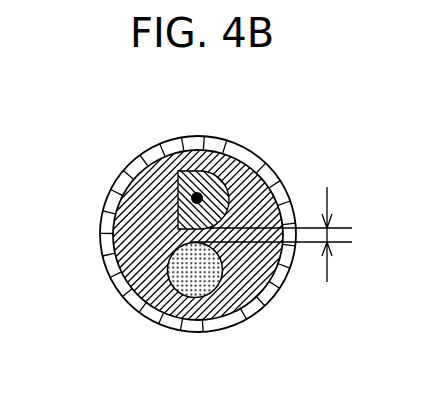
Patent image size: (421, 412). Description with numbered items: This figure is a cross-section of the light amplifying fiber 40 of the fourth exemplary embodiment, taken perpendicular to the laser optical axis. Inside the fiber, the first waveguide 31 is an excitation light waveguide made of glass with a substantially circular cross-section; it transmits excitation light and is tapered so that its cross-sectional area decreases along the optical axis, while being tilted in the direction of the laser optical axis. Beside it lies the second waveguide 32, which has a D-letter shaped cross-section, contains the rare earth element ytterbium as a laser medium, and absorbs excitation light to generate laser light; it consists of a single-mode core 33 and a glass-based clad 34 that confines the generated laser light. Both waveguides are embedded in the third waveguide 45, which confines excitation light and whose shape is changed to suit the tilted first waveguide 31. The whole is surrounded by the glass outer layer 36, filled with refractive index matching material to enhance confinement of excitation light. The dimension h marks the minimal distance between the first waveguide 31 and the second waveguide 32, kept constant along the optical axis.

The first waveguide 31 is at (180, 269).
The second waveguide 32 is at (178, 187).
The core 33 is at (200, 171).
The clad 34 is at (233, 157).
The outer layer 36 is at (218, 327).
The light amplifying fiber 40 is at (107, 293).
The third waveguide 45 is at (240, 254).